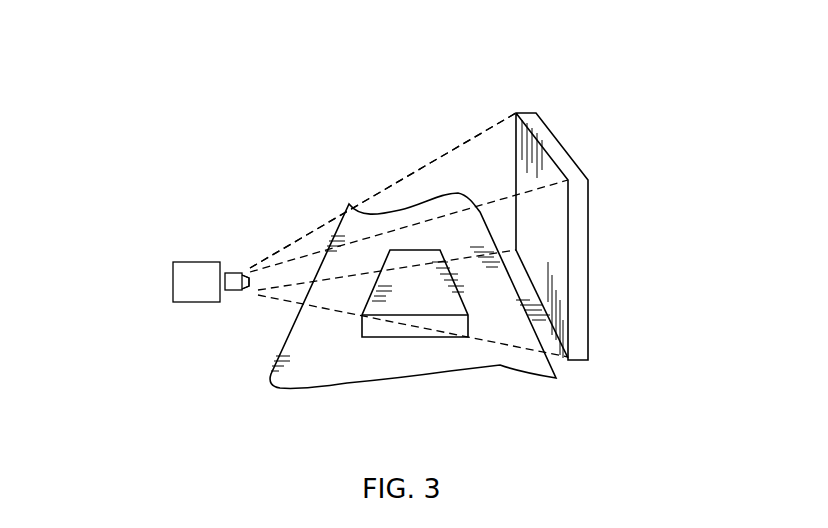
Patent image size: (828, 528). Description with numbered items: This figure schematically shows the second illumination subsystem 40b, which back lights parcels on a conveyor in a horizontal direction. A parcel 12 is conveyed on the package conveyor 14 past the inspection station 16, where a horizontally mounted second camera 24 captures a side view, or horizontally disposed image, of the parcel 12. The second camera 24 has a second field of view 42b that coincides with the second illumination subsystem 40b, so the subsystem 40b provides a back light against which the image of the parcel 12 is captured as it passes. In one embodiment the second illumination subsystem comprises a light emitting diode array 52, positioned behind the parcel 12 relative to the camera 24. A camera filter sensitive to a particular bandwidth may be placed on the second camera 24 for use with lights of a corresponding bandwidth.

The inspection station 16 is at (288, 228).
The second illumination subsystem 40b is at (446, 143).
The second camera 24 is at (173, 266).
The second field of view 42b is at (262, 292).
The package conveyor 14 is at (322, 372).
The parcel 12 is at (432, 305).
The light emitting diode (LED) array 52 is at (560, 232).